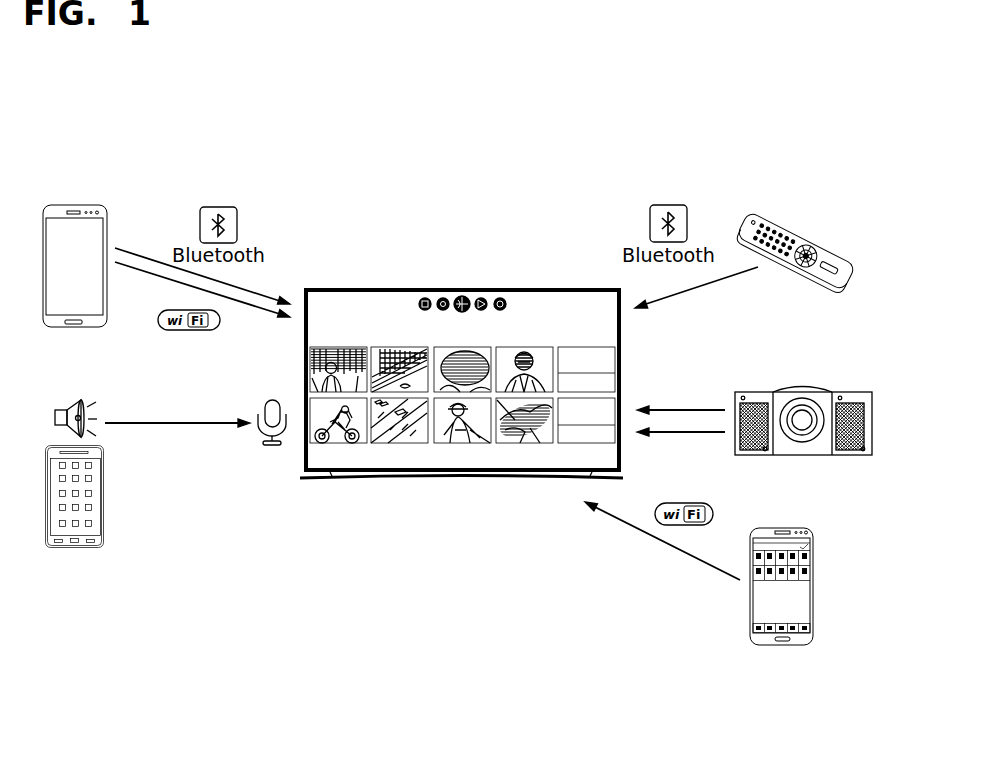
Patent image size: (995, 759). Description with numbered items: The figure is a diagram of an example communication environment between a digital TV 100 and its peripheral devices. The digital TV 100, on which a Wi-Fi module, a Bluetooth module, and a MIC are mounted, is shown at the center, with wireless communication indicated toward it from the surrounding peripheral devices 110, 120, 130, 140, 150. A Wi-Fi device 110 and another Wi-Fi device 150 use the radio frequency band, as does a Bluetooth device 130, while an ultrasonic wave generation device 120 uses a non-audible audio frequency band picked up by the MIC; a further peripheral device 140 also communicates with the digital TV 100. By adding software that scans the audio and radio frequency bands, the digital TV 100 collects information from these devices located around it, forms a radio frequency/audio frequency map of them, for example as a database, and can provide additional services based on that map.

The digital TV 100 is at (463, 287).
The Wi-Fi device 110 is at (76, 206).
The ultrasonic wave generation device 120 is at (105, 495).
The Bluetooth device 130 is at (780, 222).
The peripheral device 140 is at (800, 387).
The Wi-Fi device 150 is at (783, 527).